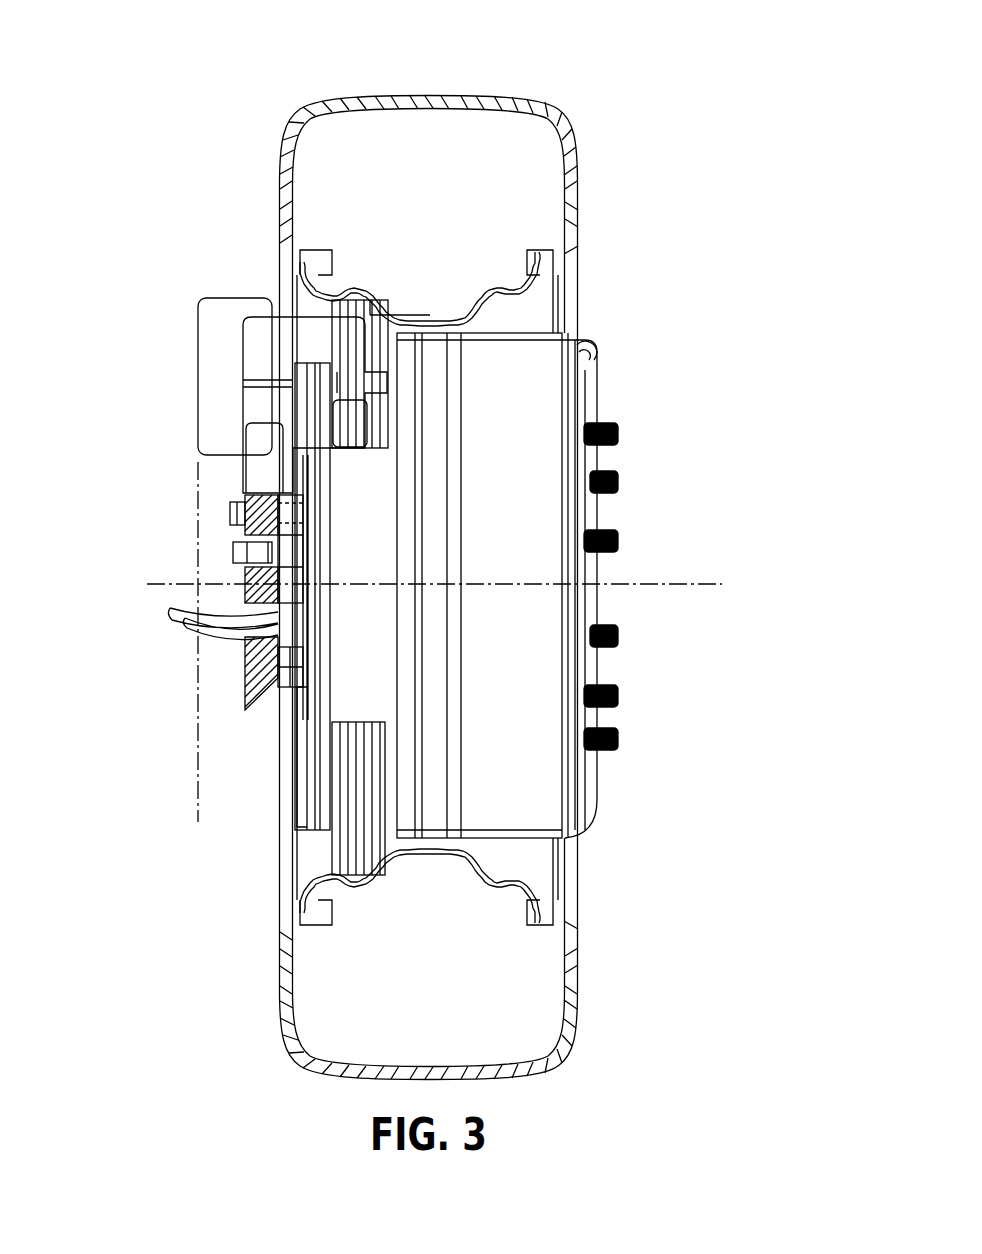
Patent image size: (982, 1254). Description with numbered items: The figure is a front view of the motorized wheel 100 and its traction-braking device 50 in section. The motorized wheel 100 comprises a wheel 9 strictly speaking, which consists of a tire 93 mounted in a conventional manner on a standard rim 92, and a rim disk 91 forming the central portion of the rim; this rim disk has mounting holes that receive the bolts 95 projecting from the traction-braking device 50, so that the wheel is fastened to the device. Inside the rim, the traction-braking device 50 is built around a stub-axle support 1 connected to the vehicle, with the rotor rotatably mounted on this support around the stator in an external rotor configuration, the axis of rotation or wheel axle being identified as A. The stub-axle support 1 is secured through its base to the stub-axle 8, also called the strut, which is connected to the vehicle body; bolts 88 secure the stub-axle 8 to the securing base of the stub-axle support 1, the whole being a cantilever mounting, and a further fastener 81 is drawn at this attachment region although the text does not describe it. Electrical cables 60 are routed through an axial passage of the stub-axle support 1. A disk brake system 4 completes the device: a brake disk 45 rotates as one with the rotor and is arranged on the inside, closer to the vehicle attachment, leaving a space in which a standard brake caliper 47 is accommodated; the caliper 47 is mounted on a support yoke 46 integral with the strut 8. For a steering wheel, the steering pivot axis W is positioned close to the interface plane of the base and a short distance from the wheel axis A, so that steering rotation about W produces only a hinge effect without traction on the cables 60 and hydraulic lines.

The motorized wheel 100 is at (394, 552).
The wheel 9 is at (497, 588).
The tire 93 is at (590, 202).
The rim 92 is at (560, 298).
The rim disk 91 is at (616, 585).
The traction-braking device 50 is at (510, 587).
The bolts 95 is at (619, 432).
The disk brake system 4 is at (269, 509).
The brake disk 45 is at (320, 408).
The brake caliper 47 is at (197, 322).
The support yoke 46 is at (302, 367).
The bolts 88 is at (231, 513).
The fastening bolt 81 is at (234, 552).
The electrical cables 60 is at (150, 612).
The stub-axle 8 is at (240, 666).
The stub-axle support 1 is at (293, 655).
The axis of rotation A is at (688, 584).
The steering pivot axis W is at (196, 786).